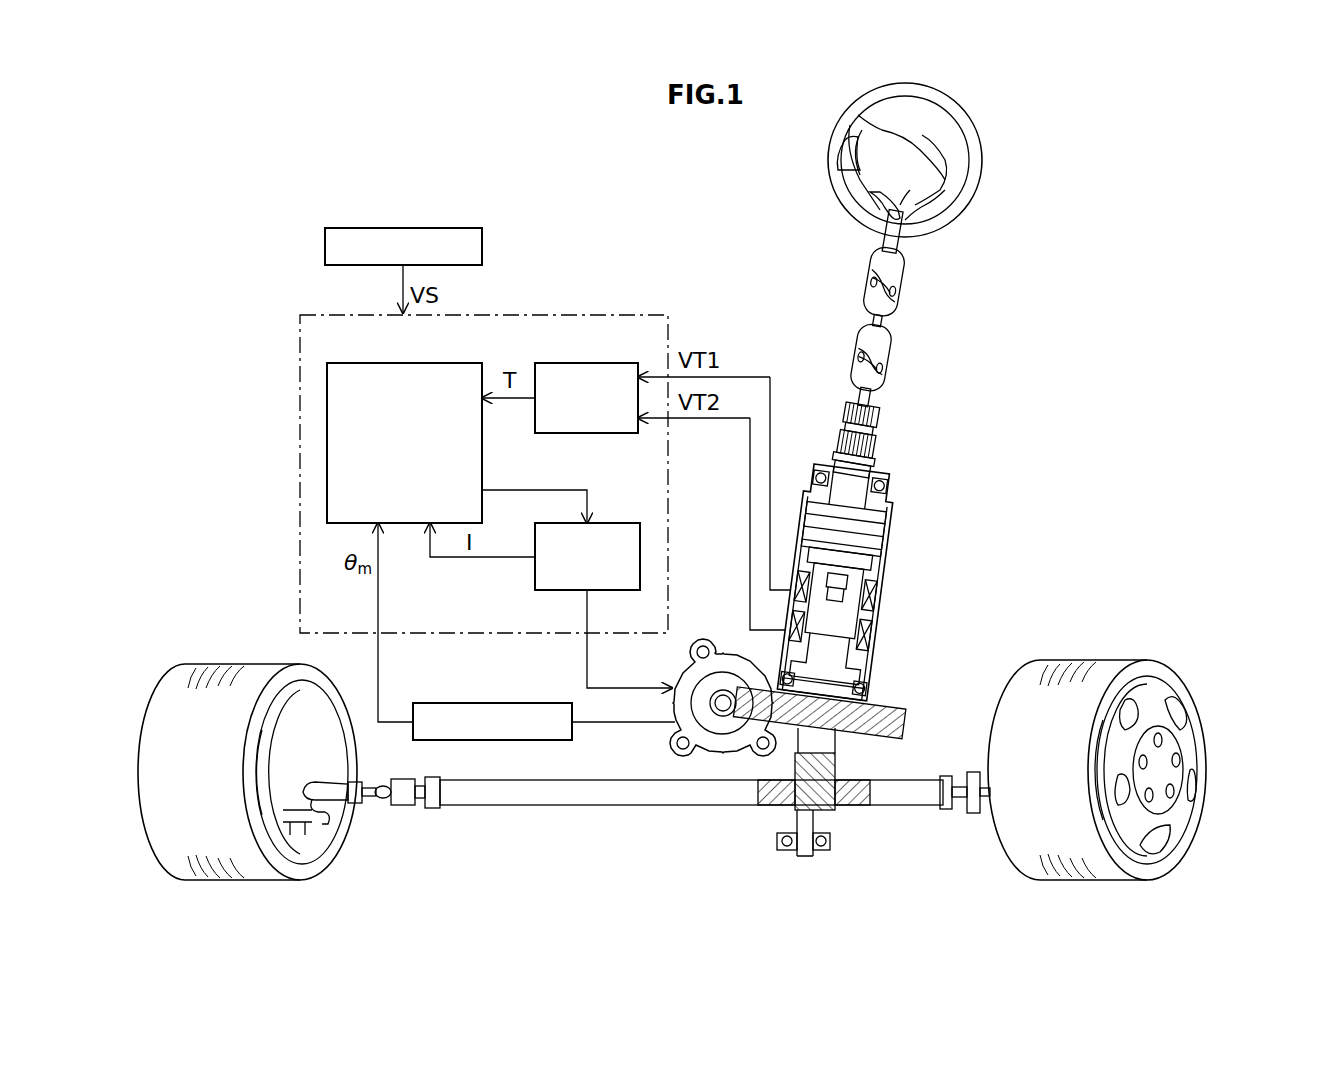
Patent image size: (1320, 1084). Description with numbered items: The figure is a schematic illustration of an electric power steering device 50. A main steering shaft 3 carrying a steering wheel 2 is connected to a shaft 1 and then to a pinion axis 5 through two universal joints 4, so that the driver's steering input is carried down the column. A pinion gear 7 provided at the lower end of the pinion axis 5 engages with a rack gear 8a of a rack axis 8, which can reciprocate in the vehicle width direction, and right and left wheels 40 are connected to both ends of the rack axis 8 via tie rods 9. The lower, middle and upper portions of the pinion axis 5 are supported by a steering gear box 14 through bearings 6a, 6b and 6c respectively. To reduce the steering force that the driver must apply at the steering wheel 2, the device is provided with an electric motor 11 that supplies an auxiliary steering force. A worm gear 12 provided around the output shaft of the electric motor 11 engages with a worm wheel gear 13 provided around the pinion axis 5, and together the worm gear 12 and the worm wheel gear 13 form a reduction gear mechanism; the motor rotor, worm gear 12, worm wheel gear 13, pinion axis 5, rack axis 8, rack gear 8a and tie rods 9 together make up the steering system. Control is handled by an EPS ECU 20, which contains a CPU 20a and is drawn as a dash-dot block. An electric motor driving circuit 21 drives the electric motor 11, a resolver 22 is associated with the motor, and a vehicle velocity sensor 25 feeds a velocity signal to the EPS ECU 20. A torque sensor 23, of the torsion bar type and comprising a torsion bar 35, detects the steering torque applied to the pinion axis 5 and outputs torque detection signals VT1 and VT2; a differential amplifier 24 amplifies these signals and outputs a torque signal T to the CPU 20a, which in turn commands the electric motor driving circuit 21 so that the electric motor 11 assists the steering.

The shaft 1 is at (866, 398).
The steering wheel 2 is at (980, 188).
The main steering shaft 3 is at (900, 242).
The universal joints 4 is at (883, 352).
The pinion axis 5 is at (836, 746).
The bearing 6a is at (830, 848).
The bearing 6b is at (865, 692).
The bearing 6c is at (893, 486).
The pinion gear 7 is at (820, 790).
The rack axis 8 is at (464, 805).
The rack gear 8a is at (776, 808).
The tie rods 9 is at (364, 800).
The electric motor 11 is at (684, 678).
The worm gear 12 is at (726, 690).
The worm wheel gear 13 is at (905, 716).
The steering gear box 14 is at (792, 858).
The EPS ECU 20 is at (545, 315).
The CPU 20a is at (327, 400).
The electric motor driving circuit 21 is at (605, 523).
The resolver 22 is at (532, 703).
The torque sensor 23 is at (906, 584).
The differential amplifier 24 is at (565, 363).
The vehicle velocity sensor 25 is at (440, 228).
The torsion bar 35 is at (840, 589).
The wheels 40 is at (205, 660).
The electric power steering device 50 is at (1115, 180).